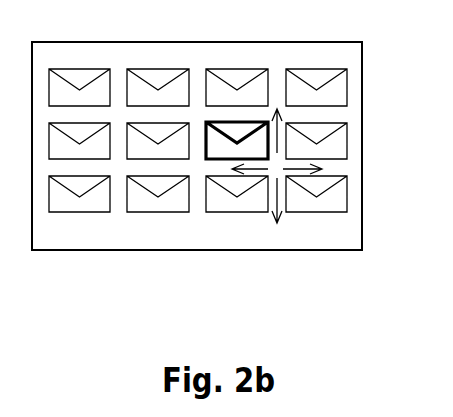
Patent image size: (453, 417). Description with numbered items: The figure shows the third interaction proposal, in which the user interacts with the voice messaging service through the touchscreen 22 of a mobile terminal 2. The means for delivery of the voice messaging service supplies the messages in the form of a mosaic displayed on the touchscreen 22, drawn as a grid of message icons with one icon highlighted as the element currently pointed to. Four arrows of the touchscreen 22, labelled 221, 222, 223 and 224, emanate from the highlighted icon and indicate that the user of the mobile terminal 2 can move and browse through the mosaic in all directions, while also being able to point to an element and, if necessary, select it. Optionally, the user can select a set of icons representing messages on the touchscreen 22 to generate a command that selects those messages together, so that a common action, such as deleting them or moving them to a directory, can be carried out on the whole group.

The mobile terminal 2 is at (197, 131).
The touchscreen 22 is at (198, 156).
The left navigation arrow 221 is at (243, 164).
The right navigation arrow 222 is at (320, 168).
The up navigation arrow 223 is at (282, 118).
The down navigation arrow 224 is at (283, 219).